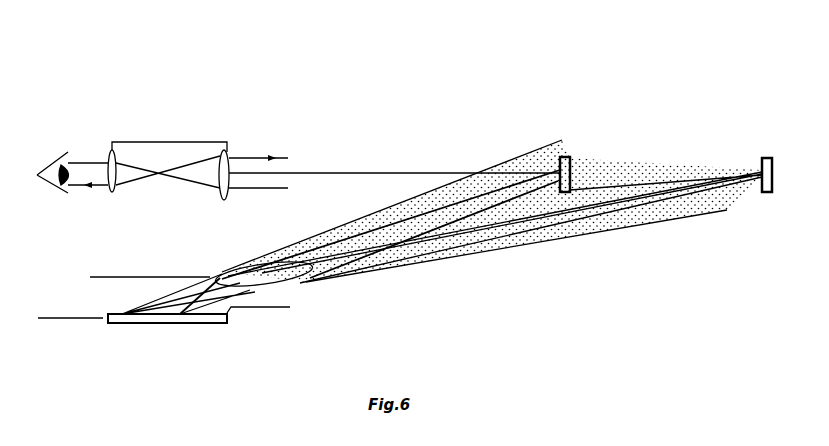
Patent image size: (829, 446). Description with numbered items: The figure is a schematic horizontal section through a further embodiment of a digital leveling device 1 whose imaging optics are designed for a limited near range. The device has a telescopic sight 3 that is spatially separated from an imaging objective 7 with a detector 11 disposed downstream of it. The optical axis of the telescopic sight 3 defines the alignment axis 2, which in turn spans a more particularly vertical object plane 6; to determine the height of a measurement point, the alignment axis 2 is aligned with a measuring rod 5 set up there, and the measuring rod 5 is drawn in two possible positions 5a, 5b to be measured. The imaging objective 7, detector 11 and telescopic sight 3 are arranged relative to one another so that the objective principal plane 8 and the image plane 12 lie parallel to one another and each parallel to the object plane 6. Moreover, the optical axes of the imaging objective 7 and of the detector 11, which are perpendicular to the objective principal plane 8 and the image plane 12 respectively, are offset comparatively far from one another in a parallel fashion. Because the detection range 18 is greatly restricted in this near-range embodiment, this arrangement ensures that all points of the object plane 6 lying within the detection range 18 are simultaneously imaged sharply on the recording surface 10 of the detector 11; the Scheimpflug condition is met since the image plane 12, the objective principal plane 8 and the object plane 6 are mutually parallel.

The digital leveling device 1 is at (147, 51).
The alignment axis 2 is at (419, 172).
The telescopic sight 3 is at (168, 142).
The measuring rod 5 is at (50, 146).
The first measuring rod position 5a is at (562, 115).
The second measuring rod position 5b is at (763, 199).
The object plane 6 is at (337, 174).
The imaging objective 7 is at (321, 288).
The objective principal plane 8 is at (130, 272).
The recording surface 10 is at (272, 308).
The detector 11 is at (172, 333).
The image plane 12 is at (53, 313).
The detection range 18 is at (571, 235).